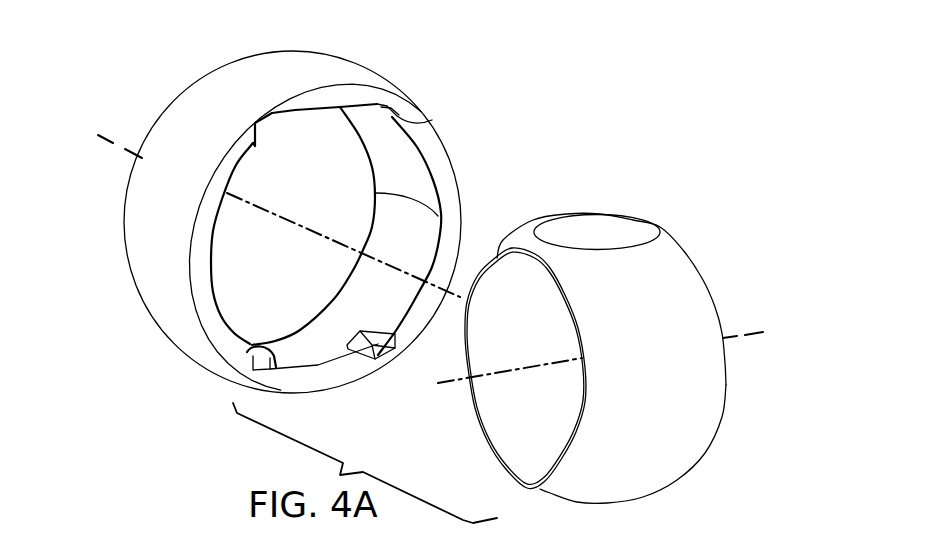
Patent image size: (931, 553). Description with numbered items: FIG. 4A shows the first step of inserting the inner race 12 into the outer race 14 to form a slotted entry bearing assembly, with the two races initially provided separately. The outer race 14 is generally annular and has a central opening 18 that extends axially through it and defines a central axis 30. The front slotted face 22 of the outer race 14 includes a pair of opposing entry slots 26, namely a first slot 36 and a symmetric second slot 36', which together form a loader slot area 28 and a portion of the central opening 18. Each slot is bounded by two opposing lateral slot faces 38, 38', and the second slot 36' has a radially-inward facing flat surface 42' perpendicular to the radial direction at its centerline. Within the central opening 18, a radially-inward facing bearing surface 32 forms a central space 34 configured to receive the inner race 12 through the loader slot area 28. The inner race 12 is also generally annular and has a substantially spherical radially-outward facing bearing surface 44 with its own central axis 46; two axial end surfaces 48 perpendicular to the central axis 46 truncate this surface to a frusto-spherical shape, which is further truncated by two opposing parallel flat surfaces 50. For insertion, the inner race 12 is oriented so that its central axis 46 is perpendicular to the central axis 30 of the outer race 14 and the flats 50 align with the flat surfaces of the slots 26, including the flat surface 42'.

The inner race 12 is at (713, 209).
The outer race 14 is at (472, 110).
The central opening 18 is at (270, 253).
The front slotted face 22 is at (212, 318).
The entry slots 26 is at (357, 107).
The loader slot area 28 is at (316, 118).
The central axis 30 is at (98, 142).
The radially-inward facing bearing surface 32 is at (412, 168).
The central space 34 is at (232, 231).
The first slot 36 is at (218, 108).
The second slot 36' is at (335, 398).
The lateral slot faces 38 is at (418, 101).
The lateral slot faces 38' is at (389, 366).
The radially-inward facing flat surface 42' is at (239, 378).
The radially-outward facing bearing surface 44 is at (697, 443).
The central axis 46 is at (745, 338).
The axial end surfaces 48 is at (553, 488).
The flat surfaces 50 is at (614, 228).